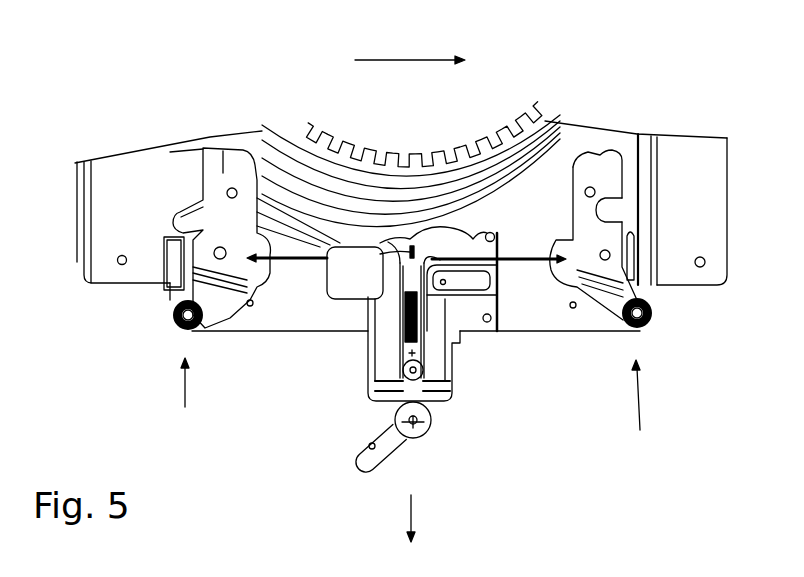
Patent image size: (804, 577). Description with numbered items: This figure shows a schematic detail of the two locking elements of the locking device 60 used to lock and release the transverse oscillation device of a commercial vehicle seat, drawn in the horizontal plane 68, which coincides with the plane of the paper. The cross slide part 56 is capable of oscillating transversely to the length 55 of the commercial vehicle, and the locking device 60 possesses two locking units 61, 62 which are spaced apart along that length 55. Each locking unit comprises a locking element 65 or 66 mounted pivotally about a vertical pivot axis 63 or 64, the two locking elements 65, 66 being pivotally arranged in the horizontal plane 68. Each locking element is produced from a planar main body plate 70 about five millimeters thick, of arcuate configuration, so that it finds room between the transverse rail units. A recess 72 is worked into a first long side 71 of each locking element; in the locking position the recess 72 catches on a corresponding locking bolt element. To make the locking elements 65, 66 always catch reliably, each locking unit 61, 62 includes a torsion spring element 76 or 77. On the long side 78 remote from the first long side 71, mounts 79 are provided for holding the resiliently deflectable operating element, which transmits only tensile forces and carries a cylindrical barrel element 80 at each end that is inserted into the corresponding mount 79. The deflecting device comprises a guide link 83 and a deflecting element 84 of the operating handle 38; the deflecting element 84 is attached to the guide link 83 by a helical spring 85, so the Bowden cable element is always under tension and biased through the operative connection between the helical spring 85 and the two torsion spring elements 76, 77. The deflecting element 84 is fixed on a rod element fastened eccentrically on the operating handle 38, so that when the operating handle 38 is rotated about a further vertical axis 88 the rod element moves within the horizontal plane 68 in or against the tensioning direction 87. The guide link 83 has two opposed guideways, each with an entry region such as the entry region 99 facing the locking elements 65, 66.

The operating handle 38 is at (407, 448).
The length of the commercial vehicle 55 is at (400, 57).
The cross slide part 56 is at (725, 158).
The locking device 60 is at (656, 116).
The locking unit 61 is at (184, 397).
The locking unit 62 is at (640, 410).
The vertical pivot axis 63 is at (177, 330).
The vertical pivot axis 64 is at (652, 326).
The locking element 65 is at (220, 162).
The locking element 66 is at (613, 157).
The horizontal plane 68 is at (72, 144).
The main body plate 70 is at (590, 160).
The first long side 71 is at (625, 231).
The recess 72 is at (617, 212).
The torsion spring element 76 is at (623, 272).
The torsion spring element 77 is at (172, 264).
The long side 78 is at (260, 217).
The mount 79 is at (241, 262).
The cylindrical barrel element 80 is at (574, 257).
The guide link 83 is at (465, 343).
The deflecting element 84 is at (422, 373).
The helical spring 85 is at (393, 337).
The tensioning direction 87 is at (412, 510).
The further vertical axis 88 is at (397, 418).
The entry region 99 is at (498, 265).